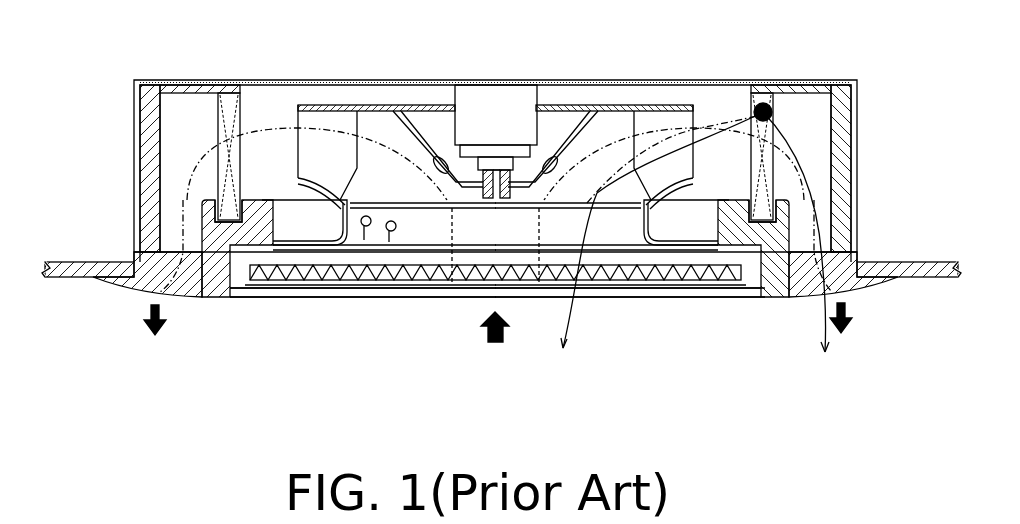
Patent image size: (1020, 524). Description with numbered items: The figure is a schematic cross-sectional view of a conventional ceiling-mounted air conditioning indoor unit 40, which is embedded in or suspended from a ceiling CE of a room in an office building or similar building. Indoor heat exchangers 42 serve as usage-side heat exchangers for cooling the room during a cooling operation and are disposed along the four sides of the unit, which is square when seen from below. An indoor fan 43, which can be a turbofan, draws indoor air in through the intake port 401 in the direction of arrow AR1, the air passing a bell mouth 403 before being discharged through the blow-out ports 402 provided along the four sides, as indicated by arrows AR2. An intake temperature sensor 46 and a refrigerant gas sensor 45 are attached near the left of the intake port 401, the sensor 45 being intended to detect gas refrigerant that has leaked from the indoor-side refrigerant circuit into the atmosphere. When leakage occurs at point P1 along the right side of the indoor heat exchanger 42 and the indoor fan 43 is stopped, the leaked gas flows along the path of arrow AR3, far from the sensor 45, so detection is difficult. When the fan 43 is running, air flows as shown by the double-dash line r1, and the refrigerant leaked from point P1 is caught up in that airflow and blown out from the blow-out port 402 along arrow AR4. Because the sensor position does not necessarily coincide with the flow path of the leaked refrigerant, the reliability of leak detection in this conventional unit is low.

The indoor unit 40 is at (638, 62).
The indoor heat exchanger 42 is at (240, 104).
The indoor fan 43 is at (554, 86).
The refrigerant gas sensor 45 is at (392, 221).
The intake temperature sensor 46 is at (370, 217).
The intake port 401 is at (477, 297).
The blow-out port 402 is at (160, 288).
The bell mouth 403 is at (316, 283).
The leakage point P1 is at (777, 108).
The airflow double-dash line r1 is at (183, 200).
The ceiling CE is at (68, 262).
The arrow AR1 is at (496, 345).
The arrow AR2 is at (165, 320).
The arrow AR3 is at (571, 312).
The arrow AR4 is at (828, 335).